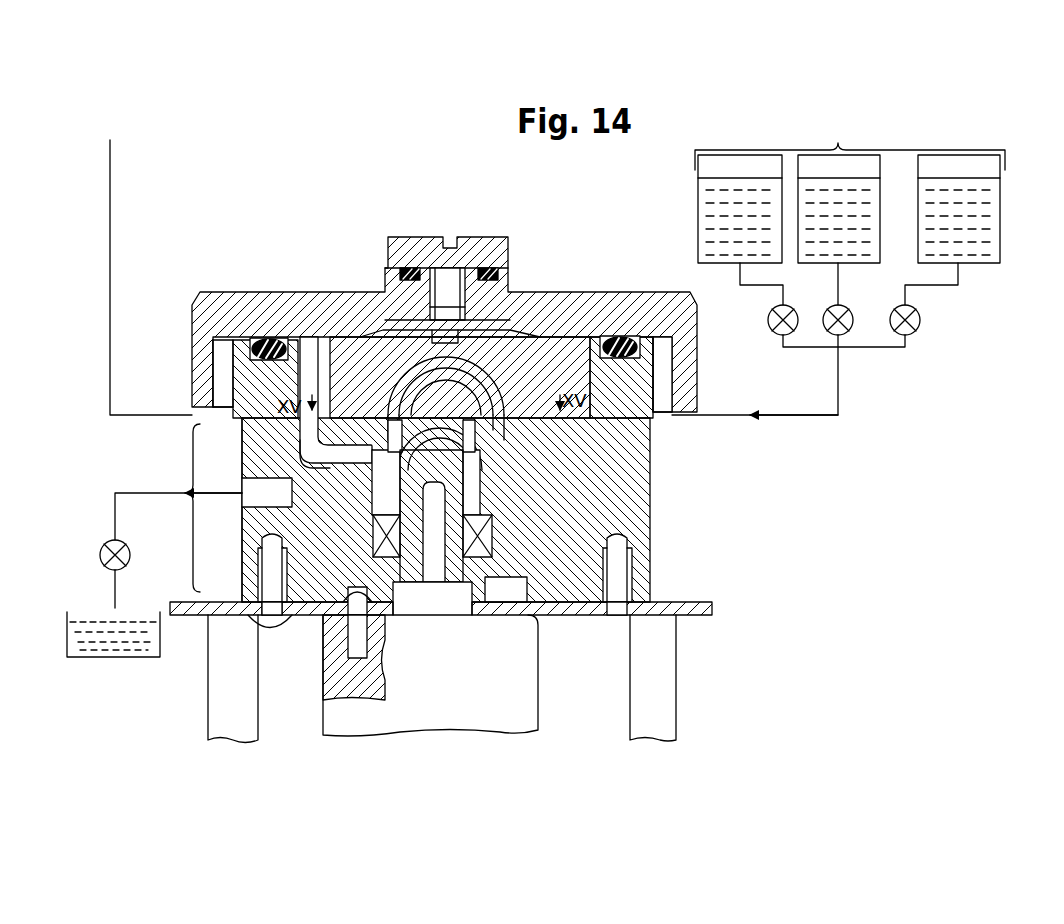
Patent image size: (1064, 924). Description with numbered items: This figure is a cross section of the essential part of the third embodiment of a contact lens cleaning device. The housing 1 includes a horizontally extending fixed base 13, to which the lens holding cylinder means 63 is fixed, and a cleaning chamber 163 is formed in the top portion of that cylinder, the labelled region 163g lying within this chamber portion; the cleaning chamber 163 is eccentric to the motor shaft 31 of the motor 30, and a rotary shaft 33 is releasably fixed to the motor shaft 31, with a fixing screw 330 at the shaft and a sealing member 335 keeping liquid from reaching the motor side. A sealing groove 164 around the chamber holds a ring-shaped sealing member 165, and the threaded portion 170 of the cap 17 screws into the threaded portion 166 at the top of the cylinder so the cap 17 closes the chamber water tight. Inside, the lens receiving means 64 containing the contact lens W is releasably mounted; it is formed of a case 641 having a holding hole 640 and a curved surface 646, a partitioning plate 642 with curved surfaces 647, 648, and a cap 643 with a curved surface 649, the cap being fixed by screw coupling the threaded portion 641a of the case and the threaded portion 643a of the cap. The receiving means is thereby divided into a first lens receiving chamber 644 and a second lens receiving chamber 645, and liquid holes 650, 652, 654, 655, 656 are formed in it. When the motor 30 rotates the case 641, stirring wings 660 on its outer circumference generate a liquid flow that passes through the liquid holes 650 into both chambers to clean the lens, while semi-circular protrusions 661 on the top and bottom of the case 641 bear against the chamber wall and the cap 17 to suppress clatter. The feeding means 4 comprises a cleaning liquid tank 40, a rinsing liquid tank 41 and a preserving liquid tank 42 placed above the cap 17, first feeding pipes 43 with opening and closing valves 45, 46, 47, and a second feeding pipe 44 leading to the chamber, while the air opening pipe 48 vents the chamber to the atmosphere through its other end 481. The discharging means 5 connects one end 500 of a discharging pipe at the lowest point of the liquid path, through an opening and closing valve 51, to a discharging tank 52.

The housing 1 is at (190, 620).
The feeding means 4 is at (850, 141).
The discharging means 5 is at (133, 497).
The fixed base 13 is at (198, 602).
The cap 17 is at (197, 300).
The motor 30 is at (538, 673).
The motor shaft 31 is at (437, 590).
The rotary shaft 33 is at (410, 590).
The cleaning liquid tank 40 is at (698, 218).
The rinsing liquid tank 41 is at (880, 240).
The preserving liquid tank 42 is at (1000, 222).
The first feeding pipes 43 is at (783, 285).
The second feeding pipe 44 is at (770, 418).
The opening and closing valve 45 is at (768, 320).
The opening and closing valve 46 is at (852, 330).
The opening and closing valve 47 is at (920, 320).
The air opening pipe 48 is at (110, 208).
The other end of the air opening pipe 481 is at (110, 162).
The opening and closing valve 51 is at (130, 555).
The discharging tank 52 is at (158, 612).
The lens holding cylinder means 63 is at (177, 508).
The lens receiving means 64 is at (340, 445).
The cleaning chamber 163 is at (655, 470).
The groove 163g is at (620, 520).
The sealing groove 164 is at (672, 375).
The sealing member 165 is at (268, 400).
The threaded portion 166 is at (216, 357).
The threaded portion 170 is at (222, 388).
The fixing screw 330 is at (360, 656).
The sealing member 335 is at (527, 590).
The one end of the discharging pipe 500 is at (250, 494).
The holding hole 640 is at (470, 596).
The case 641 is at (262, 342).
The threaded portion 641a is at (340, 345).
The partitioning plate 642 is at (492, 350).
The cap 643 is at (392, 330).
The threaded portion 643a is at (352, 352).
The first lens receiving chamber 644 is at (590, 490).
The second lens receiving chamber 645 is at (468, 330).
The curved surface 646 is at (620, 540).
The curved surface 647 is at (400, 325).
The curved surface 648 is at (462, 590).
The curved surface 649 is at (482, 340).
The liquid holes 650 is at (320, 412).
The liquid holes 652 is at (590, 450).
The liquid holes 654 is at (297, 612).
The liquid holes 655 is at (360, 455).
The liquid holes 656 is at (350, 650).
The stirring wings 660 is at (600, 425).
The protrusions 661 is at (586, 300).
The contact lens W is at (416, 340).